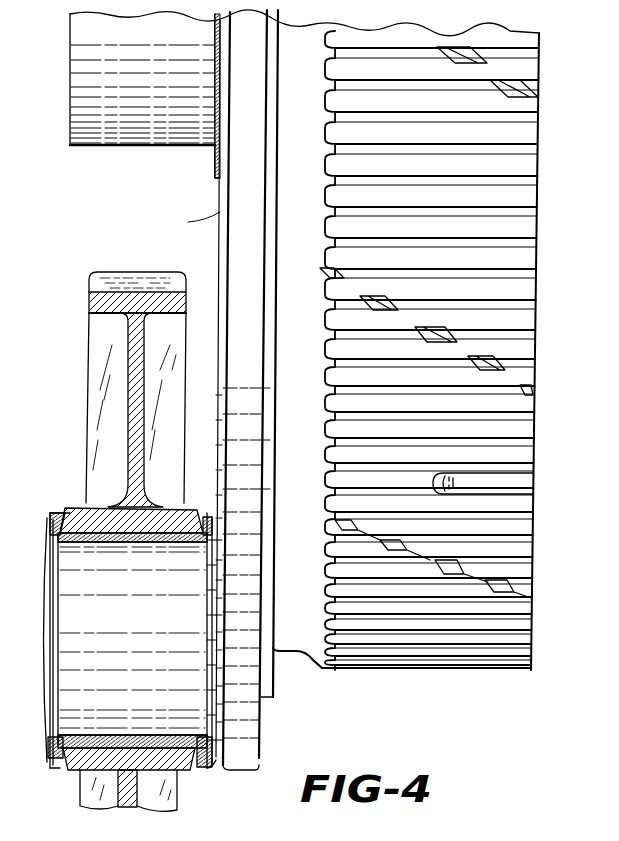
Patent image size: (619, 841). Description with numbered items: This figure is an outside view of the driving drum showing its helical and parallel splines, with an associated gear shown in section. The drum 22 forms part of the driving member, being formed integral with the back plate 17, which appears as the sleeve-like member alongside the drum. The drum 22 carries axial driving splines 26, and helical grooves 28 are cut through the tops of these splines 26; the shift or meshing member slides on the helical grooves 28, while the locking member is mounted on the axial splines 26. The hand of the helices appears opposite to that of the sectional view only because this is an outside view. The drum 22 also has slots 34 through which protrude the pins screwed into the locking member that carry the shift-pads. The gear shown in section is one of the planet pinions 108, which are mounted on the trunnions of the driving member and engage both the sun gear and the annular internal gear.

The back plate 17 is at (220, 214).
The drum 22 is at (294, 655).
The axial driving splines 26 is at (530, 263).
The helical grooves 28 is at (430, 325).
The slots 34 is at (520, 494).
The planet pinions 108 is at (97, 302).